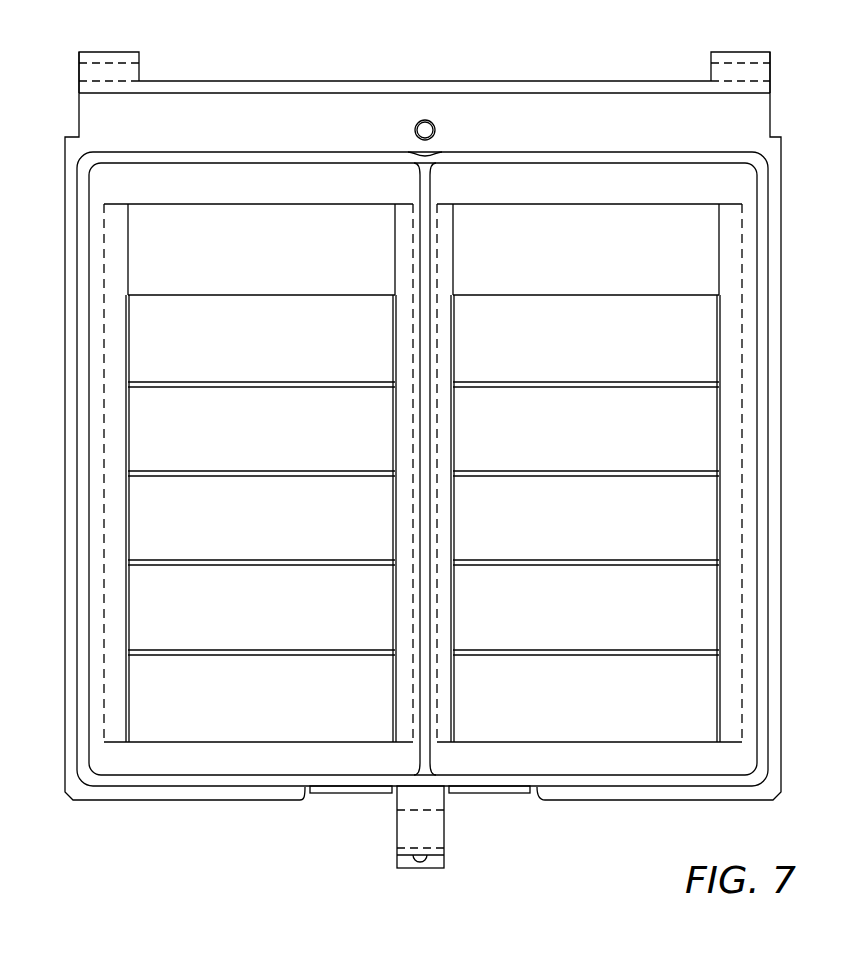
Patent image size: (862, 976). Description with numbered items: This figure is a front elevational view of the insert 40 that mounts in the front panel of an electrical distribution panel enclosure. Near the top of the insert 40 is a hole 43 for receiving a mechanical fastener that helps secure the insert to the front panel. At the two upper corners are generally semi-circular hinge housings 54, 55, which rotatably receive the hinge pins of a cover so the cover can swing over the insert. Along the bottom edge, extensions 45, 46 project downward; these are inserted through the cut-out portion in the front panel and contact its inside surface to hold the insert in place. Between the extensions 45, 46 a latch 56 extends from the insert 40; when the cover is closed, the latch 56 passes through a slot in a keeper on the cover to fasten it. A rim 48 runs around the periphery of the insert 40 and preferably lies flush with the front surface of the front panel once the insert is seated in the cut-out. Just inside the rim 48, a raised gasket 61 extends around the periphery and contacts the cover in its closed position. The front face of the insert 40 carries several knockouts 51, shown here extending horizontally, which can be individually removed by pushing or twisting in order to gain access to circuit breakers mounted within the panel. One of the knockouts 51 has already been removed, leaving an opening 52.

The insert 40 is at (430, 57).
The hole 43 is at (436, 131).
The extension 45 is at (355, 794).
The extension 46 is at (470, 794).
The rim 48 is at (96, 119).
The knockouts 51 is at (700, 687).
The opening 52 is at (718, 257).
The hinge housing 54 is at (113, 55).
The hinge housing 55 is at (710, 63).
The latch 56 is at (437, 830).
The raised gasket 61 is at (78, 315).